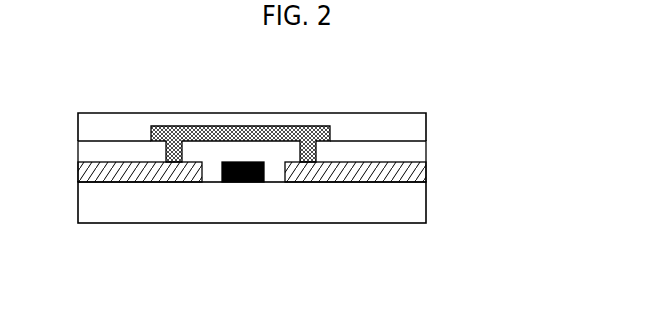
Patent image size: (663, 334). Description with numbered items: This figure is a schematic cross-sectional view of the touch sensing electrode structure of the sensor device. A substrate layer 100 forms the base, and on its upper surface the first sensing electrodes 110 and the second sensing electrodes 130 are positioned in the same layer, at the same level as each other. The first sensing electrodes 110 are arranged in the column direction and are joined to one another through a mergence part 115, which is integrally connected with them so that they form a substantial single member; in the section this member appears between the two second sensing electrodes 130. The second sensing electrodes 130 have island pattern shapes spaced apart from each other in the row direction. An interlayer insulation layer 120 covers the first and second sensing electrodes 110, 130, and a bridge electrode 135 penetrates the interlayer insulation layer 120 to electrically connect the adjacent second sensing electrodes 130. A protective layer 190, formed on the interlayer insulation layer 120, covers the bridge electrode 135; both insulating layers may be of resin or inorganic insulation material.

The substrate layer 100 is at (426, 199).
The first sensing electrodes 110 is at (250, 228).
The mergence part 115 is at (238, 182).
The interlayer insulation layer 120 is at (426, 150).
The second sensing electrodes 130 is at (158, 182).
The bridge electrode 135 is at (284, 127).
The protective layer 190 is at (426, 124).